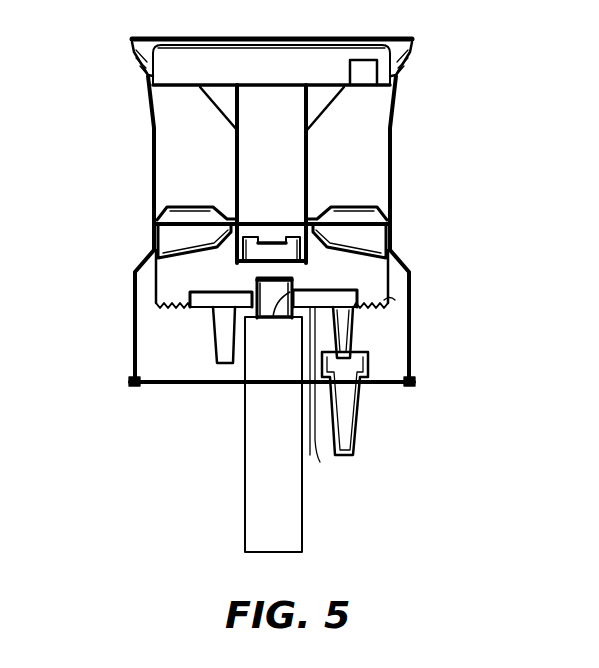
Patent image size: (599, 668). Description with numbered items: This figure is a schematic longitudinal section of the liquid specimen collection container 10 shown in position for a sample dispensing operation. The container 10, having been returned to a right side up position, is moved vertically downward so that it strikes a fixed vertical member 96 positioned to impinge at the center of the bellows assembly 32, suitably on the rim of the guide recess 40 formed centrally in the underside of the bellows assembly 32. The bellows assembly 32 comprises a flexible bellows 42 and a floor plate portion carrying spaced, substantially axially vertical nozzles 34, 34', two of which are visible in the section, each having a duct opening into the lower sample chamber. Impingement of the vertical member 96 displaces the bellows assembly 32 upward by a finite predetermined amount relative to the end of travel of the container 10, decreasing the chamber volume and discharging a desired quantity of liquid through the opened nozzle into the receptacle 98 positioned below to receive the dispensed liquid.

The liquid specimen collection container 10 is at (472, 166).
The guide recess 40 is at (293, 289).
The bellows 42 is at (388, 303).
The nozzle 34 is at (408, 332).
The nozzle 34' is at (140, 341).
The receptacle 98 is at (360, 425).
The fixed vertical member 96 is at (255, 454).
The bellows assembly 32 is at (320, 462).